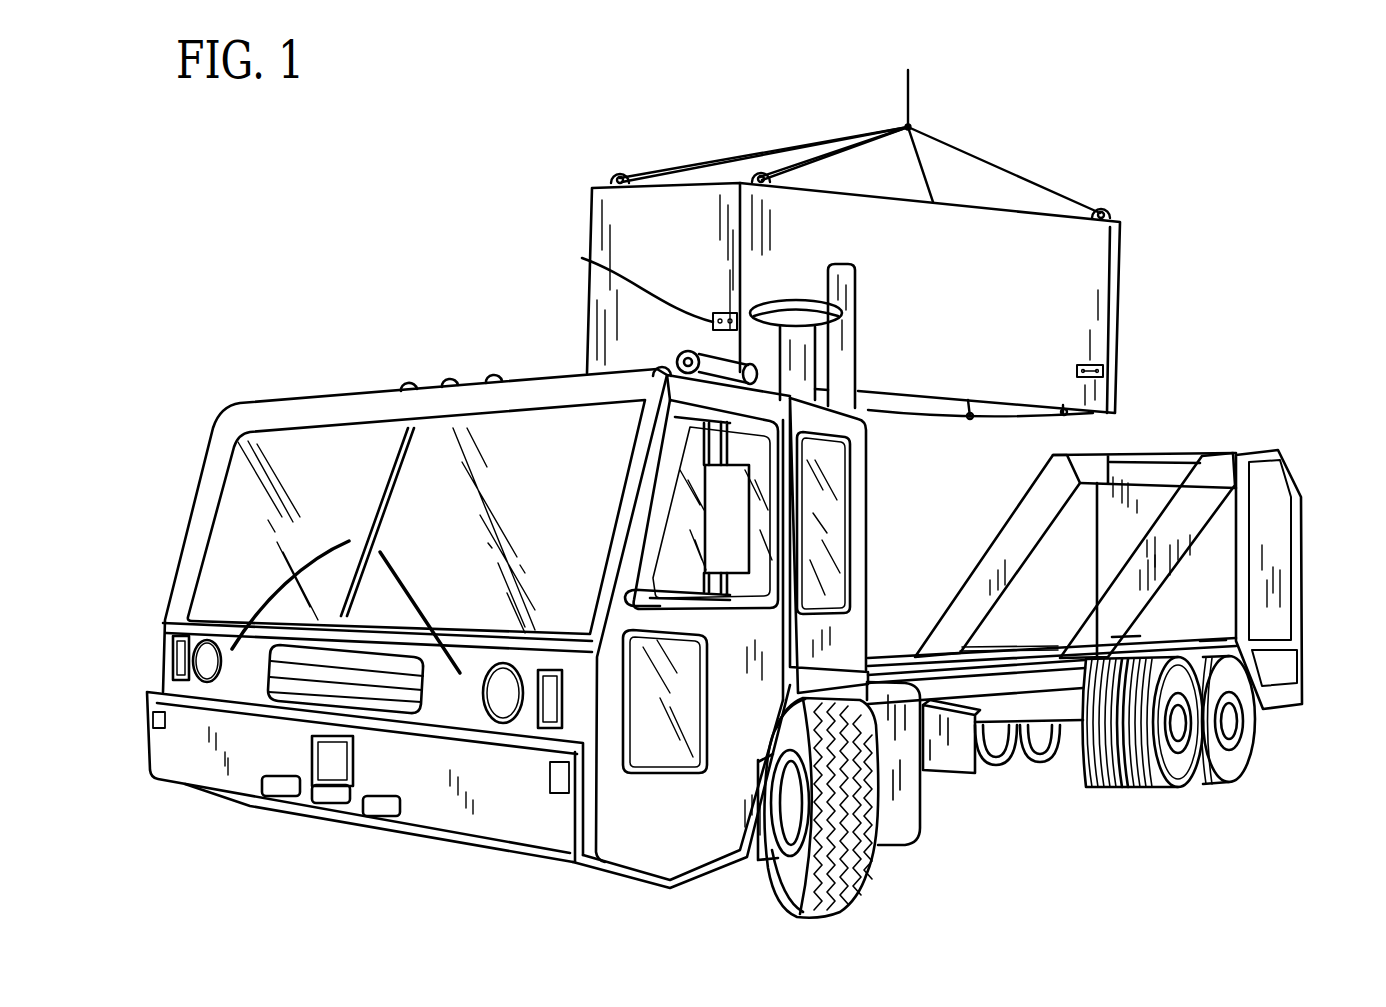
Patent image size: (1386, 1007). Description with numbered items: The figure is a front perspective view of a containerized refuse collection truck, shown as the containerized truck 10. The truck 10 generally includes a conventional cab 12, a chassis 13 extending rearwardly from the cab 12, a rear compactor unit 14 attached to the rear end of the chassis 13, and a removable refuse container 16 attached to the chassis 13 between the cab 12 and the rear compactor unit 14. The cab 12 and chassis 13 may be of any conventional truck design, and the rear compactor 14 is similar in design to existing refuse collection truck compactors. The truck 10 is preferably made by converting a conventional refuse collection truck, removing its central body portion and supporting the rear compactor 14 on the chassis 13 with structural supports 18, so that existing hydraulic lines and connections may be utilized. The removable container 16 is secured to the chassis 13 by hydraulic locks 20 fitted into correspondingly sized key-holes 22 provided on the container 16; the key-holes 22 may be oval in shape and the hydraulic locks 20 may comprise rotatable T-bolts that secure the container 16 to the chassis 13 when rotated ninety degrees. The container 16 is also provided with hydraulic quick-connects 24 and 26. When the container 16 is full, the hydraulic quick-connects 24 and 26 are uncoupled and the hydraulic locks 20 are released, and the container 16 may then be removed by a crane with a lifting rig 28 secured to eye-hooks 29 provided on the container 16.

The containerized truck 10 is at (281, 273).
The cab 12 is at (477, 374).
The chassis 13 is at (960, 688).
The rear compactor unit 14 is at (1170, 450).
The removable refuse container 16 is at (1118, 292).
The structural supports 18 is at (1090, 610).
The hydraulic locks 20 is at (1213, 640).
The key-holes 22 is at (1065, 415).
The hydraulic quick-connect 24 is at (712, 318).
The hydraulic quick-connect 26 is at (1107, 371).
The lifting rig 28 is at (951, 152).
The eye-hooks 29 is at (1100, 212).